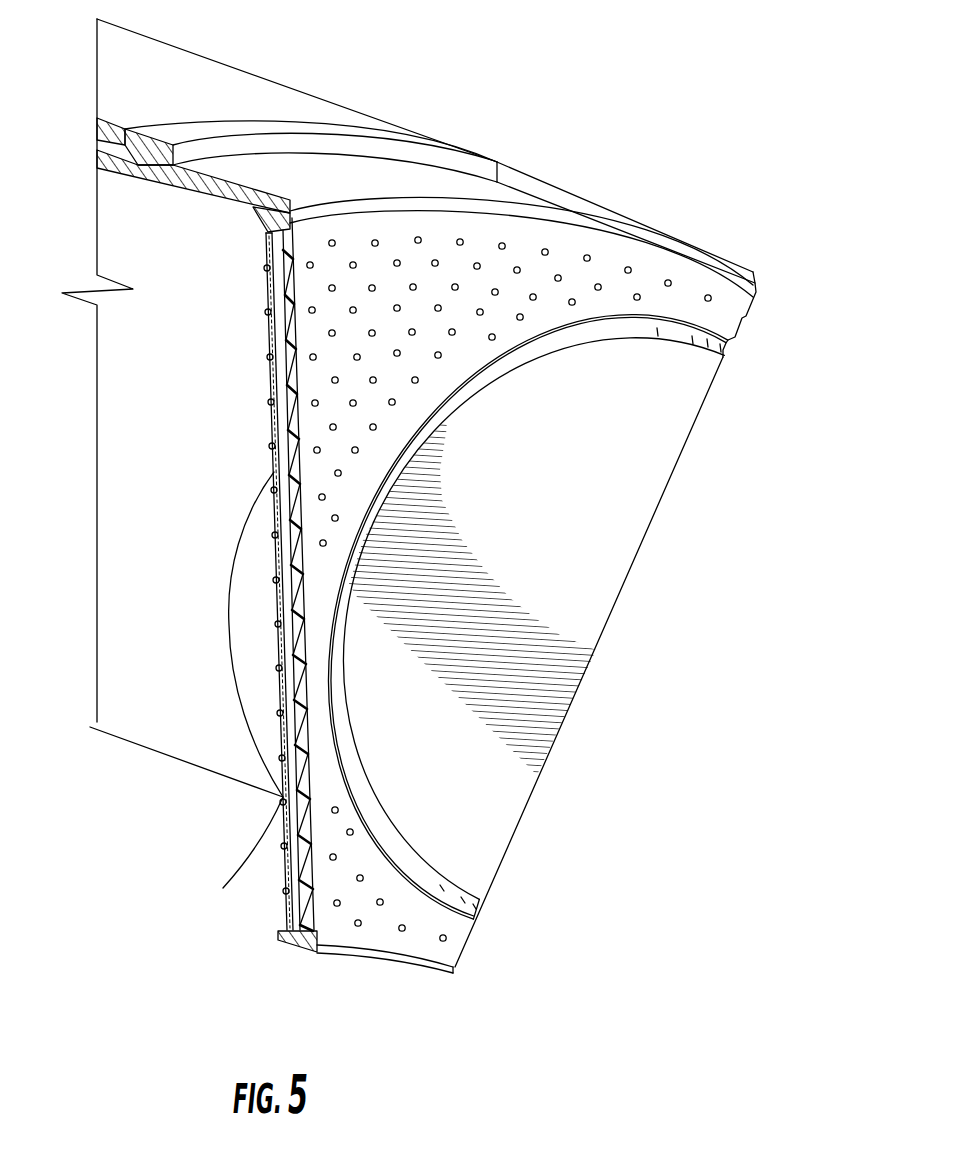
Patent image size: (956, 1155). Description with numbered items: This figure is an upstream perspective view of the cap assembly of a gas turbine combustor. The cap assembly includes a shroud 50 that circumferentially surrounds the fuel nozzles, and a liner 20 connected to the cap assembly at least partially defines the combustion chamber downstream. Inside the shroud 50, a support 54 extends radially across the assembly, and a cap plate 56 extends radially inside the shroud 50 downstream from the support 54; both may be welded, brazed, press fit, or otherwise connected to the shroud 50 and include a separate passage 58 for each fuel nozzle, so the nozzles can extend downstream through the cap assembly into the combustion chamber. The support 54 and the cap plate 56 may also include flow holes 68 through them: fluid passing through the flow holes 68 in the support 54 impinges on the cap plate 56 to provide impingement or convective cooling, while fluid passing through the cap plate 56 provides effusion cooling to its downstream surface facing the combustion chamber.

The liner 20 is at (513, 196).
The shroud 50 is at (293, 97).
The support 54 is at (285, 912).
The cap plate 56 is at (416, 935).
The passage 58 is at (703, 419).
The flow holes 68 is at (573, 300).